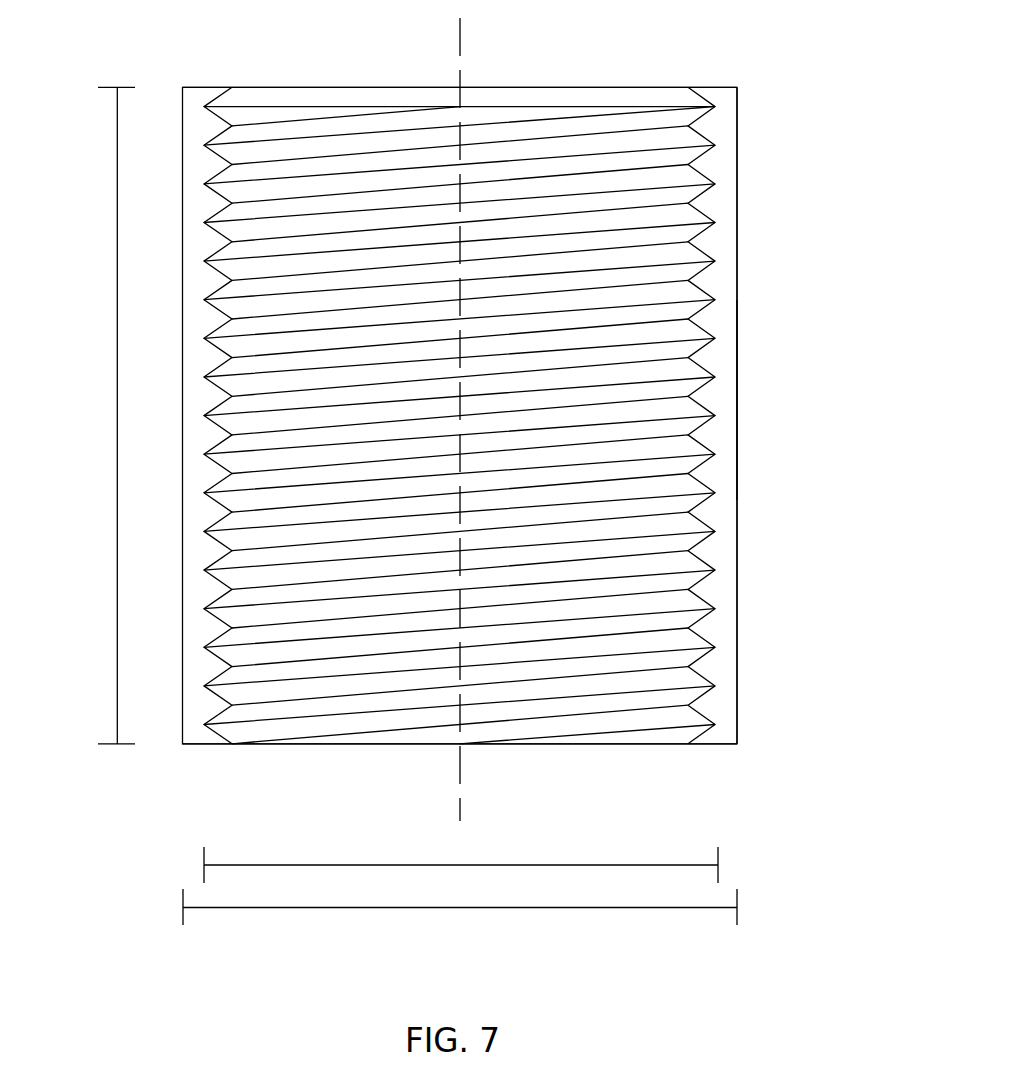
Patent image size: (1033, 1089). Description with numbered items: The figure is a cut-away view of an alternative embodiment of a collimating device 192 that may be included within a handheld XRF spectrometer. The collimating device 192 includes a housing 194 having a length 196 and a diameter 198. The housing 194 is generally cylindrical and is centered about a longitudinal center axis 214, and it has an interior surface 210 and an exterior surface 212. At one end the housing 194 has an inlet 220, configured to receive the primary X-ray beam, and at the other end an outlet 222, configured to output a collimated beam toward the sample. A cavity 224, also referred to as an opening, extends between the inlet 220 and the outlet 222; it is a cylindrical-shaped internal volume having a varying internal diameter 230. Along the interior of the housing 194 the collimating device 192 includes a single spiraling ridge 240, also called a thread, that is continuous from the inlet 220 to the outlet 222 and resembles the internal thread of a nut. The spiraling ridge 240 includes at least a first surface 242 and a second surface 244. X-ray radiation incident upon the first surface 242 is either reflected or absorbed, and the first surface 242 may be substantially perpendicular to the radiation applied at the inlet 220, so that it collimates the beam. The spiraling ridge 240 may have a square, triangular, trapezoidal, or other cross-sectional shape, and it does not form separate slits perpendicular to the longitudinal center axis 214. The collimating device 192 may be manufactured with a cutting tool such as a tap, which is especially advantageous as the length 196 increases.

The collimating device 192 is at (766, 44).
The housing 194 is at (737, 187).
The length 196 is at (117, 418).
The diameter 198 is at (640, 908).
The interior surface 210 is at (603, 107).
The exterior surface 212 is at (737, 412).
The longitudinal center axis 214 is at (460, 42).
The inlet 220 is at (580, 744).
The outlet 222 is at (318, 87).
The cavity 224 is at (277, 682).
The internal diameter 230 is at (283, 865).
The spiraling ridge 240 is at (660, 708).
The first surface 242 is at (697, 737).
The second surface 244 is at (697, 690).